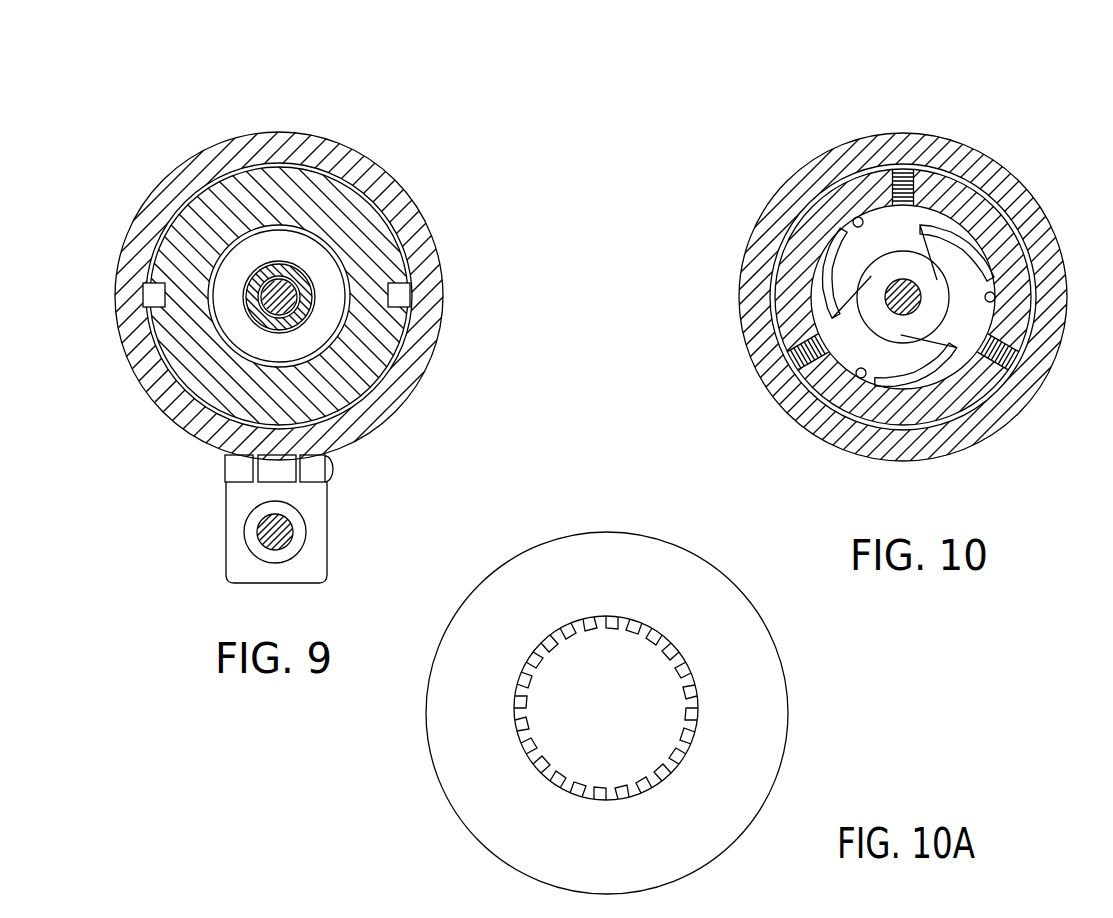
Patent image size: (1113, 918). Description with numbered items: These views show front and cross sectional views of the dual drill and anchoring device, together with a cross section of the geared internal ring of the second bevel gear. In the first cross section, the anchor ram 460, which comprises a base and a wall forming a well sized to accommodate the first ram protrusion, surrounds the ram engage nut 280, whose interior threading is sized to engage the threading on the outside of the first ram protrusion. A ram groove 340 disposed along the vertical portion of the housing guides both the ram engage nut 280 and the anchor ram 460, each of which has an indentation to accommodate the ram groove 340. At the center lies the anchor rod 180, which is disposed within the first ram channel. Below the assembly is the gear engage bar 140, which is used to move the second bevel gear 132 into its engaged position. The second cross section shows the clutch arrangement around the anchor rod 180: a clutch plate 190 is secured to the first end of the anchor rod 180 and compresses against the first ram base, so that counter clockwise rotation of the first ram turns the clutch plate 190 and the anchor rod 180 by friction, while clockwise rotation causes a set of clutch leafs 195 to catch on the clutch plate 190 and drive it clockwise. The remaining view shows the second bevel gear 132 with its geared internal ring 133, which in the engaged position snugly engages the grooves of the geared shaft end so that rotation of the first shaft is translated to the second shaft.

In FIG. 9, the anchor ram 460 is at (267, 267).
In FIG. 9, the ram engage nut 280 is at (320, 253).
In FIG. 9, the ram groove 340 is at (148, 280).
In FIG. 9, the anchor rod 180 is at (287, 300).
In FIG. 10, the anchor rod 180 is at (886, 299).
In FIG. 9, the gear engage bar 140 is at (240, 545).
In FIG. 10, the clutch plate 190 is at (888, 262).
In FIG. 10, the clutch leafs 195 is at (938, 348).
In FIG. 10A, the second bevel gear 132 is at (778, 733).
In FIG. 10A, the geared internal ring 133 is at (637, 650).